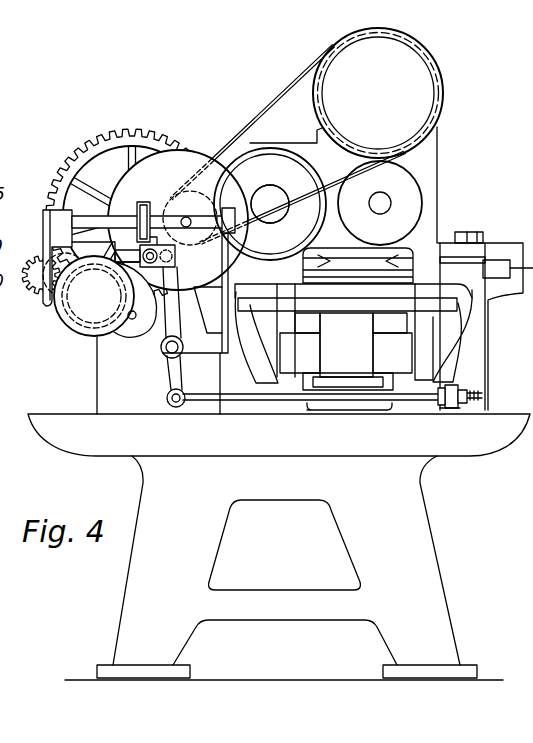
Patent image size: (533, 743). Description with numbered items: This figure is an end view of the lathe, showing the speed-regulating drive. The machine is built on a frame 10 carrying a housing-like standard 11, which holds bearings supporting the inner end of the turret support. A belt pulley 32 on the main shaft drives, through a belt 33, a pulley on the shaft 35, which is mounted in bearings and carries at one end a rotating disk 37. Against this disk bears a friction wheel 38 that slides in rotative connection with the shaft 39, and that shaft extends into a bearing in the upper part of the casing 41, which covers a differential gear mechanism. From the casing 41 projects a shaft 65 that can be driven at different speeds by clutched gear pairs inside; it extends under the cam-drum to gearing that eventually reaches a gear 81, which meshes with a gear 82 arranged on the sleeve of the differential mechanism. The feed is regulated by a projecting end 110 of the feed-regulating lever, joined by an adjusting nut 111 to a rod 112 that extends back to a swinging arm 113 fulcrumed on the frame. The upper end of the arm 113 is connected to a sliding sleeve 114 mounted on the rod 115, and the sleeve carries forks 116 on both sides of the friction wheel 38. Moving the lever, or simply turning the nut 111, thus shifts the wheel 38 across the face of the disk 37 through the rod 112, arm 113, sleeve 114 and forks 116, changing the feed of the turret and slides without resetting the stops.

The frame 10 is at (420, 523).
The standard 11 is at (440, 185).
The belt pulley 32 is at (443, 96).
The belt 33 is at (287, 94).
The shaft 35 is at (186, 216).
The rotating disk 37 is at (250, 196).
The friction wheel 38 is at (146, 203).
The shaft 39 is at (250, 229).
The casing 41 is at (51, 308).
The shaft 65 is at (132, 320).
The gear 81 is at (39, 291).
The gear 82 is at (86, 327).
The projecting end 110 is at (453, 408).
The adjusting nut 111 is at (459, 387).
The rod 112 is at (284, 401).
The swinging arm 113 is at (170, 382).
The sliding sleeve 114 is at (105, 315).
The rod 115 is at (204, 250).
The forks 116 is at (130, 218).